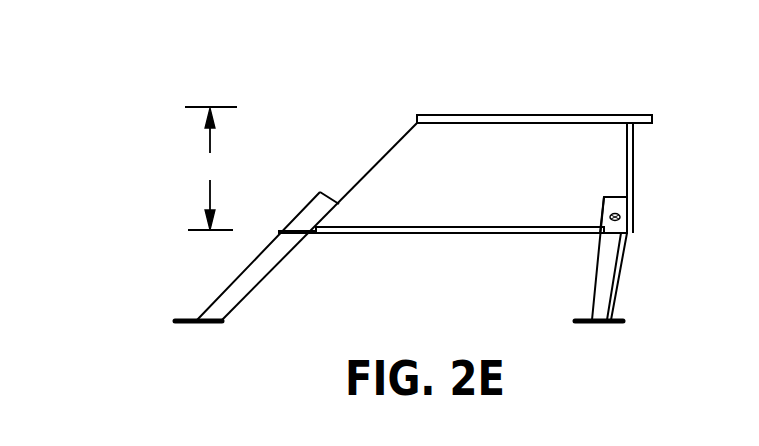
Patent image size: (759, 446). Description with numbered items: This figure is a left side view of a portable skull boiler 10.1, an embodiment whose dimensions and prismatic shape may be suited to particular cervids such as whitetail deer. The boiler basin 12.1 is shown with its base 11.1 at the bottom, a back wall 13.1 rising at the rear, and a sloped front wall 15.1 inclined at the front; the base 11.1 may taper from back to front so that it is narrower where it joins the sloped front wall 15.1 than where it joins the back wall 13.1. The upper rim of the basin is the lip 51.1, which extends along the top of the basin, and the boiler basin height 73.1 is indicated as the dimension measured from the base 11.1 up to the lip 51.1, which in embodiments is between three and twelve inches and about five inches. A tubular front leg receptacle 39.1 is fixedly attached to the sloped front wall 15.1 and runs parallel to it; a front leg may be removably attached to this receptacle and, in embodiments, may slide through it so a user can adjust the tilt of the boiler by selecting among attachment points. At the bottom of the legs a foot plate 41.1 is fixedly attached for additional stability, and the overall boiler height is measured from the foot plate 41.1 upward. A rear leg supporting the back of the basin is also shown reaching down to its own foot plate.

The portable skull boiler 10.1 is at (278, 108).
The base 11.1 is at (445, 235).
The boiler basin 12.1 is at (662, 130).
The back wall 13.1 is at (633, 203).
The sloped front wall 15.1 is at (365, 177).
The tubular front leg receptacle 39.1 is at (290, 222).
The foot plate 41.1 is at (202, 326).
The lip 51.1 is at (405, 110).
The boiler basin height 73.1 is at (211, 168).